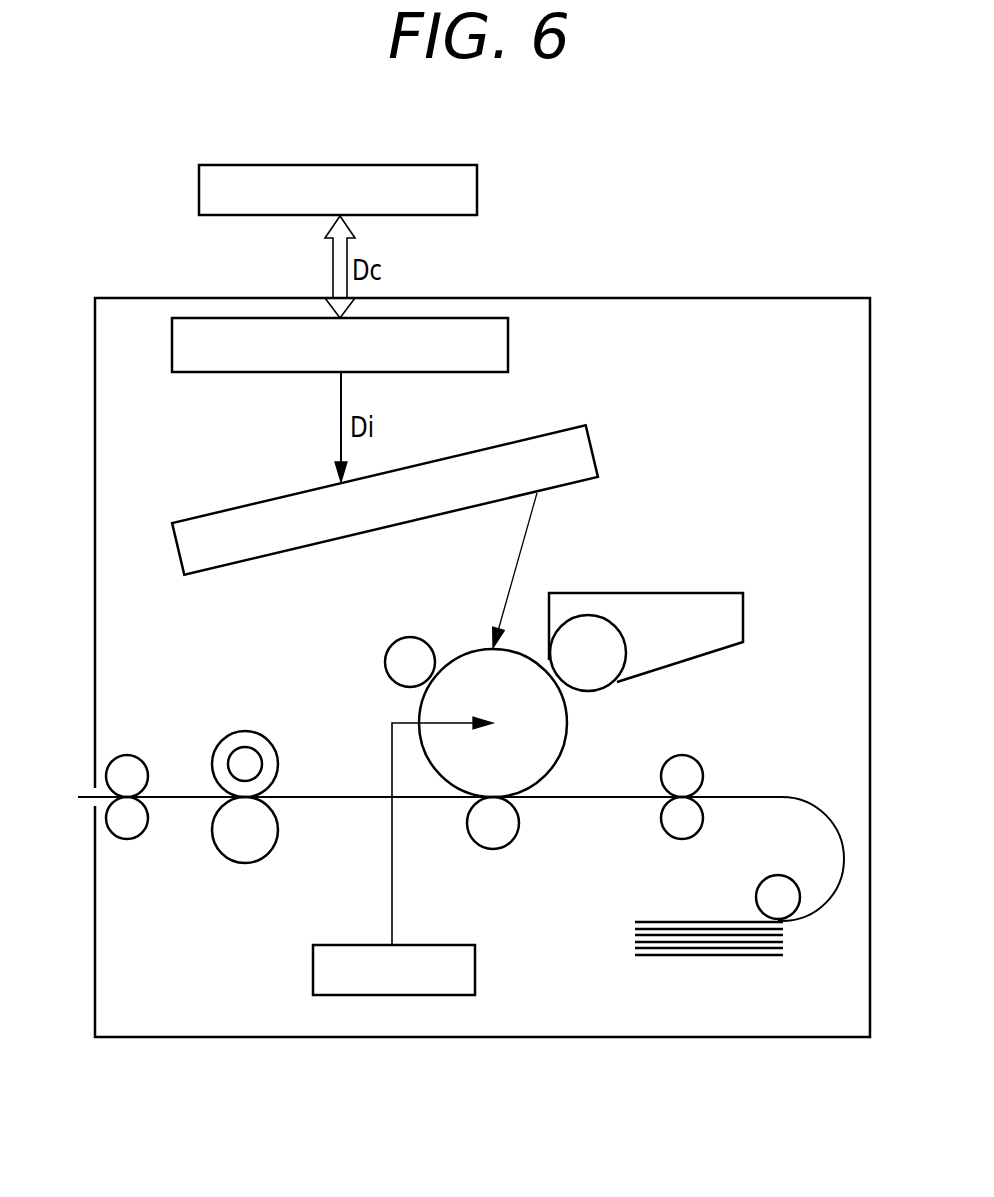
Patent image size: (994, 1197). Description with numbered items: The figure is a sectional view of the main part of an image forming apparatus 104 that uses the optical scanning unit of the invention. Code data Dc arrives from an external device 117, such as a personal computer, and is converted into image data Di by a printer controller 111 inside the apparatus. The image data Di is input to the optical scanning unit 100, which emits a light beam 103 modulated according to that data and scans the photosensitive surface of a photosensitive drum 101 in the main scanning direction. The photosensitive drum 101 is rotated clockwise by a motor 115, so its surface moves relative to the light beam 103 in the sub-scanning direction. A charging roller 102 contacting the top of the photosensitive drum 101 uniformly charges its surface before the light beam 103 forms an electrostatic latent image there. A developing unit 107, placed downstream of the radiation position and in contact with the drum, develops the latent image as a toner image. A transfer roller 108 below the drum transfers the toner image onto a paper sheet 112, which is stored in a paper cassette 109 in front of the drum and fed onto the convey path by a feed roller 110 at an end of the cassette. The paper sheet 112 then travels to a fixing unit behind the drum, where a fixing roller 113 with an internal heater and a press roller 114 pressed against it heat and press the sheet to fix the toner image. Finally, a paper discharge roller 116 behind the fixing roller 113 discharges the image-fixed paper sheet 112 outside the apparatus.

The optical scanning unit 100 is at (230, 507).
The photosensitive drum 101 is at (557, 741).
The charging roller 102 is at (403, 645).
The light beam 103 is at (523, 543).
The image forming apparatus 104 is at (645, 297).
The developing unit 107 is at (675, 597).
The transfer roller 108 is at (515, 826).
The paper cassette 109 is at (707, 957).
The feed roller 110 is at (782, 880).
The printer controller 111 is at (509, 346).
The paper sheet 112 is at (360, 796).
The fixing roller 113 is at (255, 740).
The press roller 114 is at (242, 855).
The motor 115 is at (433, 944).
The paper discharge roller 116 is at (133, 764).
The external device 117 is at (443, 164).